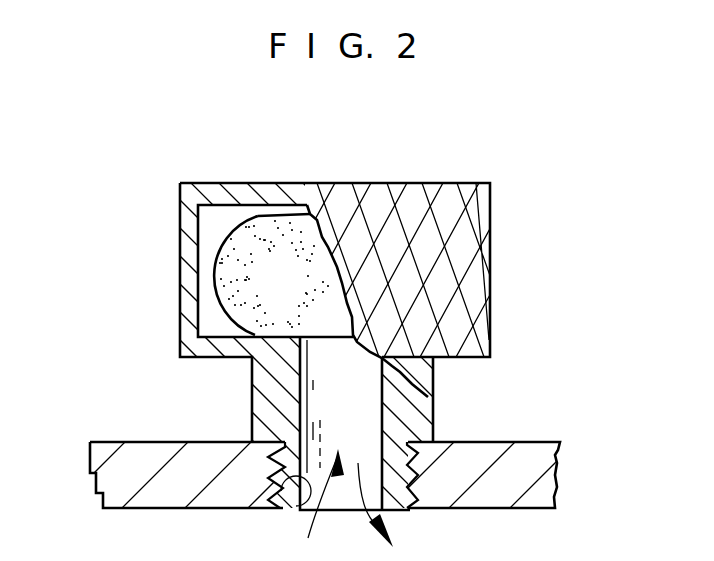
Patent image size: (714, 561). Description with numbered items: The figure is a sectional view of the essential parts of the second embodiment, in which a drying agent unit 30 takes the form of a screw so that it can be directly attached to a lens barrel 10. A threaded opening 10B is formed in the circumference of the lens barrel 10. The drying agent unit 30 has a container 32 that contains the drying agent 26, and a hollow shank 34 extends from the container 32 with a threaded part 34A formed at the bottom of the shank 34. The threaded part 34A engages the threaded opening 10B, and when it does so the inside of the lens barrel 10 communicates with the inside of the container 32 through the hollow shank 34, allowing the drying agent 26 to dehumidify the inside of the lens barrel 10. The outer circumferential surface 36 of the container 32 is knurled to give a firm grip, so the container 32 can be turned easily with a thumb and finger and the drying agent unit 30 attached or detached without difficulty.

The lens barrel 10 is at (528, 462).
The threaded opening 10B is at (311, 499).
The drying agent 26 is at (263, 225).
The drying agent unit 30 is at (363, 295).
The container 32 is at (187, 305).
The hollow shank 34 is at (260, 408).
The threaded part 34A is at (426, 475).
The outer circumferential surface 36 is at (490, 247).